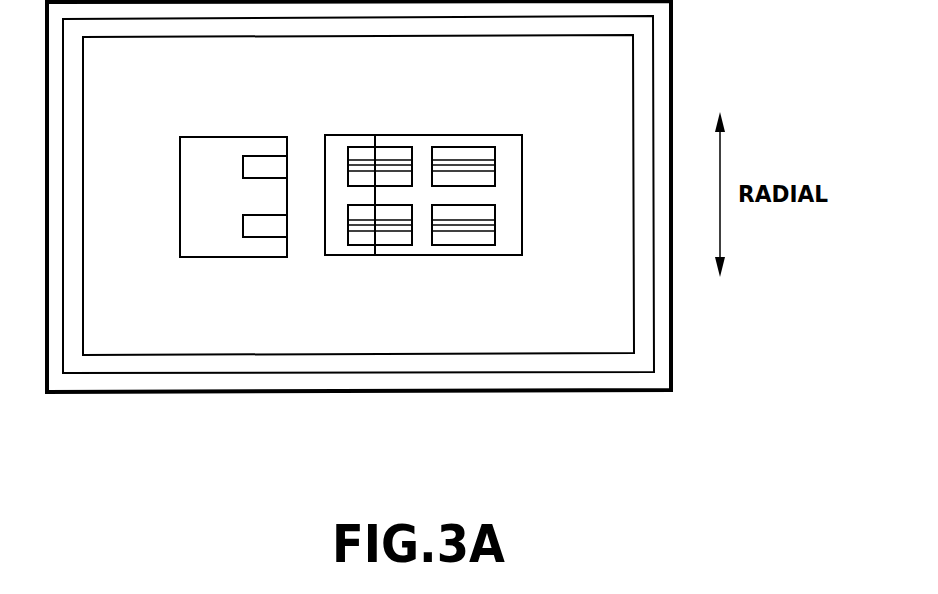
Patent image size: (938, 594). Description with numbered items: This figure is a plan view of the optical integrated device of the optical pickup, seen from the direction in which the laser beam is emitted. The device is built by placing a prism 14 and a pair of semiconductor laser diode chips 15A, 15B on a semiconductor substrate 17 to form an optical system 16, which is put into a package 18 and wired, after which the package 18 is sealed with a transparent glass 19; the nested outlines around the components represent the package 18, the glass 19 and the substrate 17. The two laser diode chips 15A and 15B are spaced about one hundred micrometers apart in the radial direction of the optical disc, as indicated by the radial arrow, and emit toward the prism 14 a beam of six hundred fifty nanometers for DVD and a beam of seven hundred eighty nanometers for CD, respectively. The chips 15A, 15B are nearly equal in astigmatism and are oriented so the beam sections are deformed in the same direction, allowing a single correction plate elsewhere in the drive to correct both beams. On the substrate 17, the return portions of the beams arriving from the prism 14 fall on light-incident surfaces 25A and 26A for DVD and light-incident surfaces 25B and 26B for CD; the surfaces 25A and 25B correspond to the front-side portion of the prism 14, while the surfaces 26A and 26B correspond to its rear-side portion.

The prism 14 is at (338, 238).
The semiconductor laser diode chip 15A is at (253, 227).
The semiconductor laser diode chip 15B is at (253, 167).
The optical system 16 is at (552, 183).
The semiconductor substrate 17 is at (228, 342).
The package 18 is at (153, 363).
The transparent glass 19 is at (283, 342).
The light-incident surface 25A is at (395, 238).
The light-incident surface 25B is at (393, 150).
The light-incident surface 26A is at (470, 238).
The light-incident surface 26B is at (468, 150).